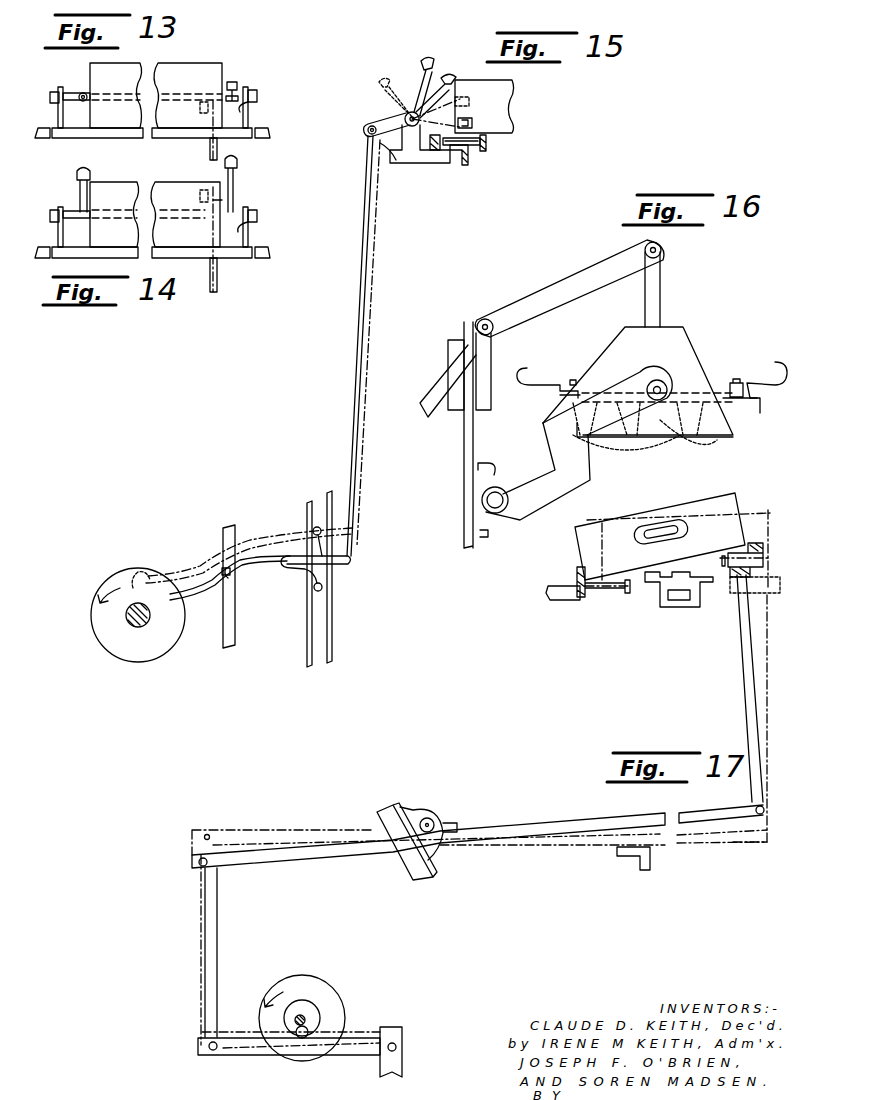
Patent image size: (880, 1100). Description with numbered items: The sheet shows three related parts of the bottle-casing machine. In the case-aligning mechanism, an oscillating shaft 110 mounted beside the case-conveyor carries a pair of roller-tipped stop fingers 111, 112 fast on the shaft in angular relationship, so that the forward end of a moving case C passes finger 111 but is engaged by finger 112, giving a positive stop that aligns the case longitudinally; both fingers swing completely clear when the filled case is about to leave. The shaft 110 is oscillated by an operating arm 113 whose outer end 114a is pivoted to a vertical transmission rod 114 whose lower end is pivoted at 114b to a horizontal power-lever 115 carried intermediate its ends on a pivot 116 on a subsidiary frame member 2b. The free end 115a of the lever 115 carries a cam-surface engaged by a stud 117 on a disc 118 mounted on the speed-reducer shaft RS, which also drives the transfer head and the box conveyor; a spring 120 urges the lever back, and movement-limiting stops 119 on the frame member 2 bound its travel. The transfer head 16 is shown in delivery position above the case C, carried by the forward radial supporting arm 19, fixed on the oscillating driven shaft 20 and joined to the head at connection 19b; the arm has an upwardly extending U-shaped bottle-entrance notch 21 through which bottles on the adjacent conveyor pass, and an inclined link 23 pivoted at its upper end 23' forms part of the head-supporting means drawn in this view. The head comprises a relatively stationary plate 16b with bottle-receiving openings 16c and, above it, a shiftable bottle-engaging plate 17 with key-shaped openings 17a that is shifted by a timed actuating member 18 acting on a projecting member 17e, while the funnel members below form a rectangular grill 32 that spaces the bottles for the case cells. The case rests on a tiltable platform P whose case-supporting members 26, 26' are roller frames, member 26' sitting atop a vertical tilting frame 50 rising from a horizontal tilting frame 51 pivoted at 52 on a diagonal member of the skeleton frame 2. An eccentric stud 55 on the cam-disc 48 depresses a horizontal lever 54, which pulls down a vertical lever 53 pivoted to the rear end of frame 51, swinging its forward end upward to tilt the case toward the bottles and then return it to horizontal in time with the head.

In FIG. 13, the bottle-carrying wooden case C is at (123, 72).
In FIG. 14, the bottle-carrying wooden case C is at (112, 187).
In FIG. 15, the bottle-carrying wooden case C is at (502, 97).
In FIG. 16, the bottle-carrying wooden case C is at (735, 508).
In FIG. 13, the oscillating shaft 110 is at (253, 98).
In FIG. 14, the oscillating shaft 110 is at (248, 220).
In FIG. 15, the oscillating shaft 110 is at (410, 112).
In FIG. 13, the stop finger 111 is at (82, 93).
In FIG. 14, the stop finger 111 is at (78, 193).
In FIG. 15, the stop finger 111 is at (414, 77).
In FIG. 13, the stop finger 112 is at (237, 84).
In FIG. 14, the stop finger 112 is at (238, 170).
In FIG. 15, the stop finger 112 is at (445, 77).
In FIG. 13, the operating arm 113 is at (205, 112).
In FIG. 14, the operating arm 113 is at (200, 210).
In FIG. 15, the operating arm 113 is at (370, 125).
In FIG. 13, the vertical transmission rod 114 is at (220, 147).
In FIG. 14, the vertical transmission rod 114 is at (218, 275).
In FIG. 15, the vertical transmission rod 114 is at (352, 415).
In FIG. 14, the outer end of operating arm 114a is at (222, 200).
In FIG. 15, the outer end of operating arm 114a is at (380, 143).
In FIG. 15, the lower pivot of transmission rod 114b is at (350, 563).
In FIG. 15, the power-lever 115 is at (260, 556).
In FIG. 15, the free end of power-lever 115a is at (140, 570).
In FIG. 15, the pivot 116 is at (227, 570).
In FIG. 15, the stud 117 is at (107, 573).
In FIG. 15, the disc 118 is at (103, 633).
In FIG. 15, the speed-reducer shaft RS is at (133, 627).
In FIG. 15, the movement-limiting stops 119 is at (325, 570).
In FIG. 15, the spring 120 is at (297, 573).
In FIG. 15, the skeleton frame 2 is at (307, 657).
In FIG. 15, the subsidiary frame member 2b is at (227, 637).
In FIG. 16, the subsidiary frame member 2b is at (487, 319).
In FIG. 16, the transfer head 16 is at (695, 328).
In FIG. 16, the relatively stationary plate 16b is at (762, 360).
In FIG. 16, the bottle-guiding and receiving openings 16c is at (672, 432).
In FIG. 16, the shiftable bottle-engaging plate 17 is at (710, 387).
In FIG. 16, the key-shaped bottle-receiving openings 17a is at (753, 398).
In FIG. 16, the projecting member 17e is at (555, 398).
In FIG. 16, the actuating member 18 is at (538, 377).
In FIG. 16, the forward supporting arm 19 is at (588, 437).
In FIG. 16, the connection of arm to transfer head 19b is at (655, 380).
In FIG. 16, the oscillating driven shaft 20 is at (503, 482).
In FIG. 16, the bottle-entrance notch 21 is at (536, 495).
In FIG. 16, the arm 23 is at (569, 288).
In FIG. 16, the arm pivot 23' is at (684, 282).
In FIG. 16, the case-supporting member 26 is at (629, 599).
In FIG. 16, the case-supporting member 26' is at (763, 543).
In FIG. 16, the rectangular grill 32 is at (743, 432).
In FIG. 16, the tiltable case-support platform P is at (758, 553).
In FIG. 17, the cam-disc 48 is at (330, 997).
In FIG. 17, the vertical tilting frame 50 is at (743, 633).
In FIG. 17, the horizontal tilting frame 51 is at (313, 855).
In FIG. 17, the pivot 52 is at (425, 820).
In FIG. 17, the vertical lever 53 is at (212, 985).
In FIG. 17, the horizontal lever 54 is at (238, 1050).
In FIG. 17, the eccentric stud 55 is at (307, 1030).